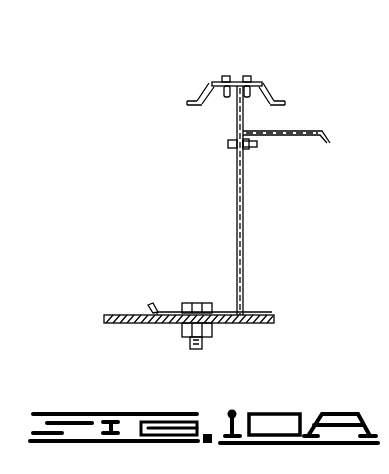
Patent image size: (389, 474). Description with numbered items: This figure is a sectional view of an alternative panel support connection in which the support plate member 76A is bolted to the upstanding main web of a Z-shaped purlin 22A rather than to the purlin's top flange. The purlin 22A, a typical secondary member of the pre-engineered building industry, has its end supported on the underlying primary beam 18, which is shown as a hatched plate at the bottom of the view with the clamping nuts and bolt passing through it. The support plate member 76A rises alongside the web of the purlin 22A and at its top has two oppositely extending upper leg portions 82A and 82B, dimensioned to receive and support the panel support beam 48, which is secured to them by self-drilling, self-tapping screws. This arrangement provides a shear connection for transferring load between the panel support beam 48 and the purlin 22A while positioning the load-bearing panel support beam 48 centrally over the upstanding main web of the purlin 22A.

The panel support beam 48 is at (212, 82).
The upper leg portion 82A is at (203, 98).
The upper leg portion 82B is at (266, 103).
The support plate member 76A is at (236, 128).
The purlin 22A is at (237, 223).
The primary beam 18 is at (263, 315).